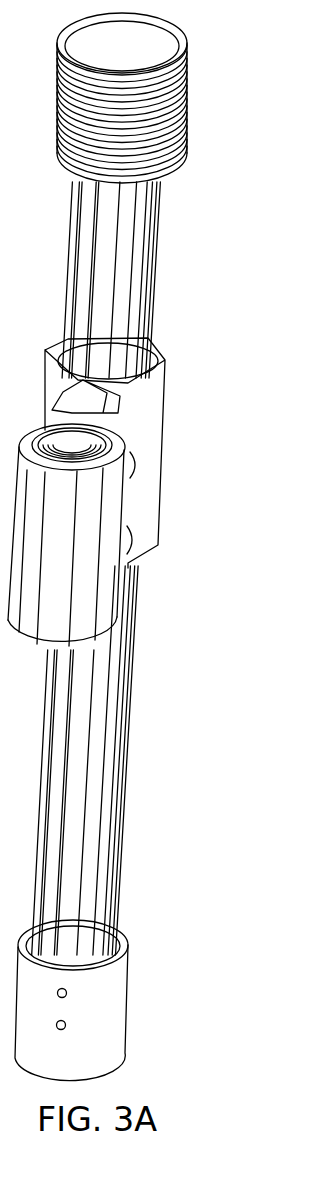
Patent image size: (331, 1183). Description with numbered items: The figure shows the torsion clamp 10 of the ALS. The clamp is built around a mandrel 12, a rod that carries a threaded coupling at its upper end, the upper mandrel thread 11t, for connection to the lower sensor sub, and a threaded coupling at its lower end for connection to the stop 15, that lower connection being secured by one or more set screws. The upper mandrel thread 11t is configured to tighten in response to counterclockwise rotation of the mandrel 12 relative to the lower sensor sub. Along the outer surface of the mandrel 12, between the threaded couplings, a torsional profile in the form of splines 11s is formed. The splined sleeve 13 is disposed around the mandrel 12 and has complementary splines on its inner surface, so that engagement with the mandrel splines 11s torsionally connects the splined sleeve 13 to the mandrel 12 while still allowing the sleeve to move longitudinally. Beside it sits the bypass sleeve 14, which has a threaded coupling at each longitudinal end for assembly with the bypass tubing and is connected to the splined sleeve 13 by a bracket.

The torsion clamp 10 is at (293, 87).
The upper mandrel thread 11t is at (188, 127).
The splines 11s is at (152, 268).
The mandrel 12 is at (330, 219).
The splined sleeve 13 is at (168, 457).
The bypass sleeve 14 is at (83, 580).
The stop 15 is at (107, 1003).